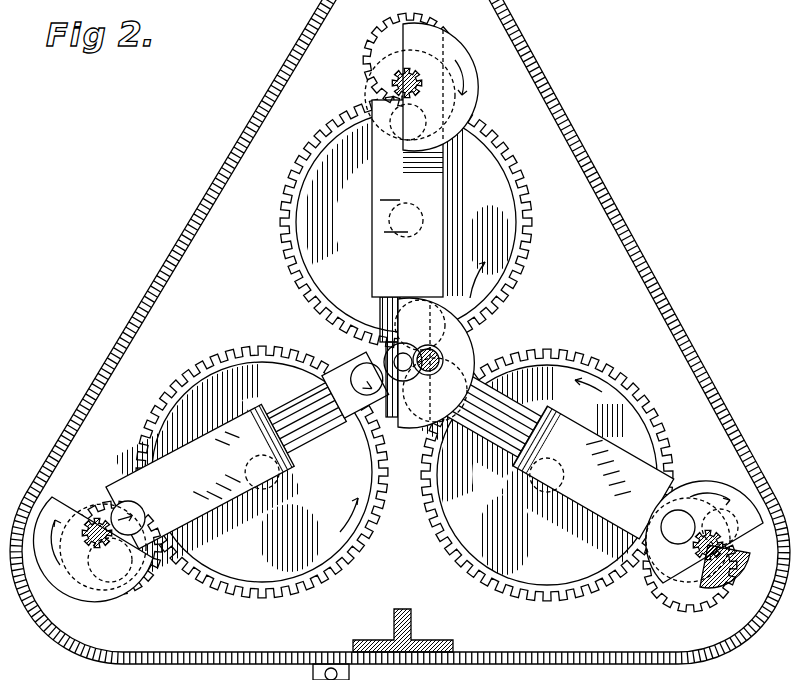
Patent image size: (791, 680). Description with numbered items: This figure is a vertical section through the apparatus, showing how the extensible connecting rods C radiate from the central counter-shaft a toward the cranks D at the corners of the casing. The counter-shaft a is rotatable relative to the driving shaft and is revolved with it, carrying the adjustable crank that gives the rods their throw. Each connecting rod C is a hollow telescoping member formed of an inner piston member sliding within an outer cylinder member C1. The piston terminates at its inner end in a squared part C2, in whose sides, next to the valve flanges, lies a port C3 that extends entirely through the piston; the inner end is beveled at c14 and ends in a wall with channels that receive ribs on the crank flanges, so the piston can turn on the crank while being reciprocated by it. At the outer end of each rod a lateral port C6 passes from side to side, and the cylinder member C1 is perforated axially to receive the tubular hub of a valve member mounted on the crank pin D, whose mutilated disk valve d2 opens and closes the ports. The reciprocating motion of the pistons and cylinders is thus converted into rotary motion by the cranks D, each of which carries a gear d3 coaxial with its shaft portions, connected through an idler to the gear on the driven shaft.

The counter-shaft a is at (440, 358).
The extensible connecting rod C is at (280, 405).
The cylinder member C1 is at (206, 437).
The squared part C2 is at (350, 365).
The port C3 is at (365, 430).
The lateral port C6 is at (373, 119).
The beveled inner end c14 is at (378, 325).
The crank D is at (467, 100).
The mutilated disk valve d2 is at (450, 68).
The gear d3 is at (152, 577).